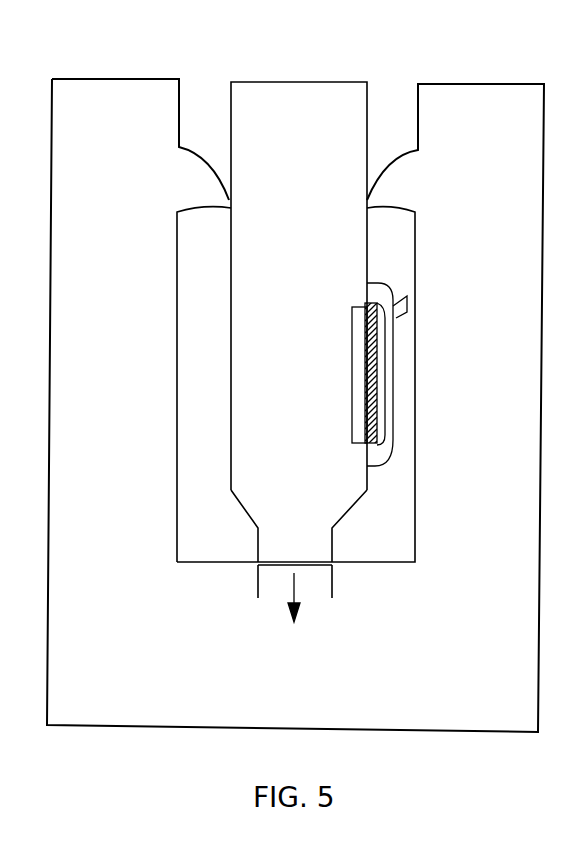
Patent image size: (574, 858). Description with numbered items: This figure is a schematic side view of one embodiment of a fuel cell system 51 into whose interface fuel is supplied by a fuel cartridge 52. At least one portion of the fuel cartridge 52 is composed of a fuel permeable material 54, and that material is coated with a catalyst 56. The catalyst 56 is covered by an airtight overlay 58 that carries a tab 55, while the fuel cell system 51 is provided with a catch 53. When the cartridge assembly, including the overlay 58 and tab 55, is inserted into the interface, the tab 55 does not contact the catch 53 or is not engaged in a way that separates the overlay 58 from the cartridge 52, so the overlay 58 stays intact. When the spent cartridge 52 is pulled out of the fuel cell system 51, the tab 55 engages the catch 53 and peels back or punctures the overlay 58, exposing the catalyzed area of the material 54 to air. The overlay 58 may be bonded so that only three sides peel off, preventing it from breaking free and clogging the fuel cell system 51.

The fuel cell system 51 is at (498, 157).
The fuel cartridge 52 is at (291, 82).
The catch 53 is at (206, 187).
The fuel permeable material 54 is at (356, 362).
The tab 55 is at (406, 300).
The catalyst 56 is at (373, 413).
The airtight overlay 58 is at (387, 351).